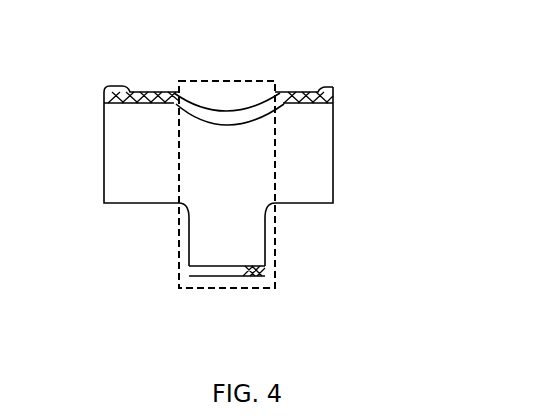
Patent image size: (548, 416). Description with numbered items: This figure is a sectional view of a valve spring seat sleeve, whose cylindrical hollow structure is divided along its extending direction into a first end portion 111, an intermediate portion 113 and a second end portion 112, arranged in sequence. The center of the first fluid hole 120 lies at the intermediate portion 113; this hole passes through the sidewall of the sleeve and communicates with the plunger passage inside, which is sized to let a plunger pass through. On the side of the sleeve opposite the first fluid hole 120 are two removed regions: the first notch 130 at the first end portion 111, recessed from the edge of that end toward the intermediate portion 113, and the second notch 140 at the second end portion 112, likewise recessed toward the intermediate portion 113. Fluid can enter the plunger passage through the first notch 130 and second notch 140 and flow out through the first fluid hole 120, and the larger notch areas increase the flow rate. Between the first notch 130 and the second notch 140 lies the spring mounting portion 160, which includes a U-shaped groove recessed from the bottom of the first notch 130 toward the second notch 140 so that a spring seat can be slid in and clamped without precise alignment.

The first end portion 111 is at (122, 103).
The second end portion 112 is at (310, 92).
The intermediate portion 113 is at (190, 283).
The first fluid hole 120 is at (225, 115).
The first notch 130 is at (157, 243).
The second notch 140 is at (305, 233).
The spring mounting portion 160 is at (260, 276).